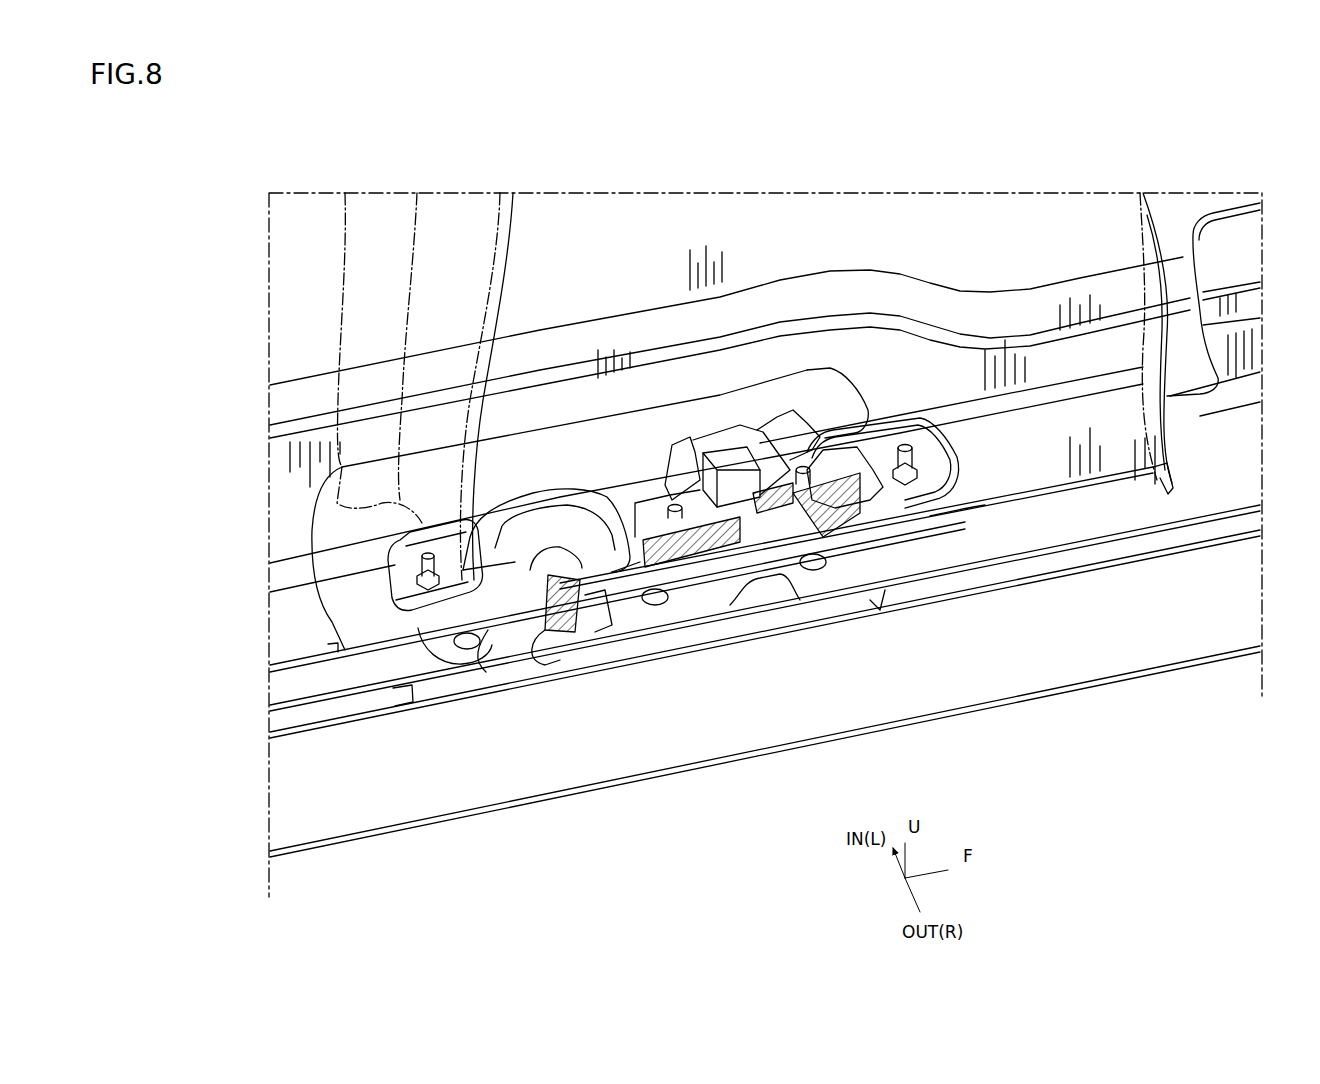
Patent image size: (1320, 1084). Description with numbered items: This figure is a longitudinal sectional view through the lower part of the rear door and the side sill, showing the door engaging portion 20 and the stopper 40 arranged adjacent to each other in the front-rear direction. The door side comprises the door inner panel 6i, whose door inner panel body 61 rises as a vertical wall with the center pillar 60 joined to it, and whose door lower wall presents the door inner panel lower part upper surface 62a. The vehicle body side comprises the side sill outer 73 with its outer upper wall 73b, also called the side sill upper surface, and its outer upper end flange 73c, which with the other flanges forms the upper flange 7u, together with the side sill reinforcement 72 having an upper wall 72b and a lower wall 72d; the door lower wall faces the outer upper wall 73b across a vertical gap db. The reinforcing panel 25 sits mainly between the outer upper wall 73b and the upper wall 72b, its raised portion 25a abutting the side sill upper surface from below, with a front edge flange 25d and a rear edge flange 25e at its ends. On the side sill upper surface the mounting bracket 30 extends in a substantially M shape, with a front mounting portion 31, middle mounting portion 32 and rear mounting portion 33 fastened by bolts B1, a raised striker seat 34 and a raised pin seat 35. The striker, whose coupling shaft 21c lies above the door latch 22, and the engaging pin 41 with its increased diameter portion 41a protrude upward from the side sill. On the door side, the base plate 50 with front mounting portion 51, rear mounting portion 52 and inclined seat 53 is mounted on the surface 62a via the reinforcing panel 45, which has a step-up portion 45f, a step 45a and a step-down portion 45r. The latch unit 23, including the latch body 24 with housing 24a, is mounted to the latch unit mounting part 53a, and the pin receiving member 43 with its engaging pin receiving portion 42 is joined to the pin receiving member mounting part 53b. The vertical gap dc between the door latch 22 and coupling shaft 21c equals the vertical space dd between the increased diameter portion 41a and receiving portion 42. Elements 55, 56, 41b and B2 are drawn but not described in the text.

The center pillar 60 is at (506, 254).
The door inner panel body 61 is at (270, 305).
The stopper 40 is at (493, 480).
The reinforcing panel 45 is at (663, 393).
The step 45a is at (915, 528).
The step-up portion 45f is at (965, 515).
The step-down portion 45r is at (868, 540).
The upper flange 7u is at (1266, 343).
The outer upper end flange 73c is at (1252, 325).
The outer upper wall 73b is at (1250, 450).
The side sill outer 73 is at (1118, 548).
The side sill reinforcement 72 is at (1175, 550).
The upper wall 72b is at (1232, 538).
The lower wall 72d is at (1108, 690).
The door inner panel lower part upper surface 62a is at (617, 604).
The door inner panel 6i is at (283, 670).
The door engaging portion 20 is at (784, 392).
The coupling shaft 21c is at (770, 455).
The latch unit 23 is at (800, 432).
The latch body 24 is at (835, 448).
The housing 24a is at (737, 440).
The bracket piece 55 is at (672, 450).
The base plate 50 is at (918, 428).
The front mounting portion 51 is at (962, 472).
The rear mounting portion 52 is at (425, 608).
The inclined seat 53 is at (655, 508).
The latch unit mounting part 53a is at (862, 492).
The pin receiving member mounting part 53b is at (490, 660).
The cover 56 is at (520, 492).
The pin receiving member 43 is at (618, 512).
The engaging pin 41 is at (552, 640).
The increased diameter portion 41a is at (540, 548).
The leg portion 41b is at (568, 640).
The engaging pin receiving portion 42 is at (608, 600).
The pin seat 35 is at (597, 645).
The rear mounting portion 33 is at (433, 650).
The front mounting portion 31 is at (835, 548).
The mounting bracket 30 is at (650, 660).
The middle mounting portion 32 is at (698, 645).
The striker seat 34 is at (762, 620).
The door latch 22 is at (775, 575).
The reinforcing panel 25 is at (800, 612).
The raised portion 25a is at (470, 690).
The front edge flange 25d is at (882, 600).
The rear edge flange 25e is at (398, 708).
The bolt B1 is at (452, 660).
The bolt B2 is at (928, 452).
The vertical space dd is at (520, 540).
The vertical gap dc is at (803, 485).
The vertical gap db is at (1038, 534).